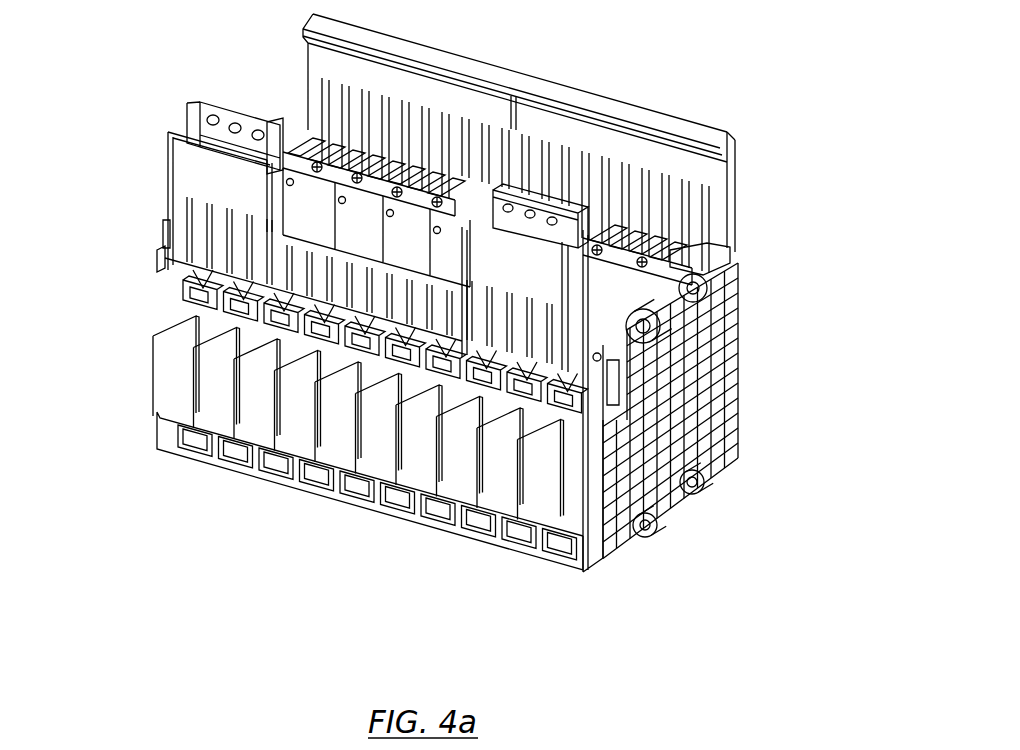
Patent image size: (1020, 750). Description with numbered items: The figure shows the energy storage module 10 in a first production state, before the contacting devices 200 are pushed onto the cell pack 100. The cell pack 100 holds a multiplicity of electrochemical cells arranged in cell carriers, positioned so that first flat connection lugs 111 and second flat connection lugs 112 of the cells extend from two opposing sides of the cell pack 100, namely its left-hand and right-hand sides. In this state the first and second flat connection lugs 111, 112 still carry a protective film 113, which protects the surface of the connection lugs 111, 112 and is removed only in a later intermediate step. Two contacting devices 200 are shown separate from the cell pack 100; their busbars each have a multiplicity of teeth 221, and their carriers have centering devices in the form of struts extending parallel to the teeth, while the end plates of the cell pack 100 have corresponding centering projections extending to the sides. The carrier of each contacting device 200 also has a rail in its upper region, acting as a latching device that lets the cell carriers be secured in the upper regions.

The energy storage module 10 is at (761, 583).
The cell pack 100 is at (240, 545).
The first flat connection lugs 111 is at (533, 567).
The second flat connection lugs 112 is at (767, 235).
The protective film 113 is at (545, 445).
The contacting devices 200 is at (104, 107).
The teeth 221 is at (552, 342).